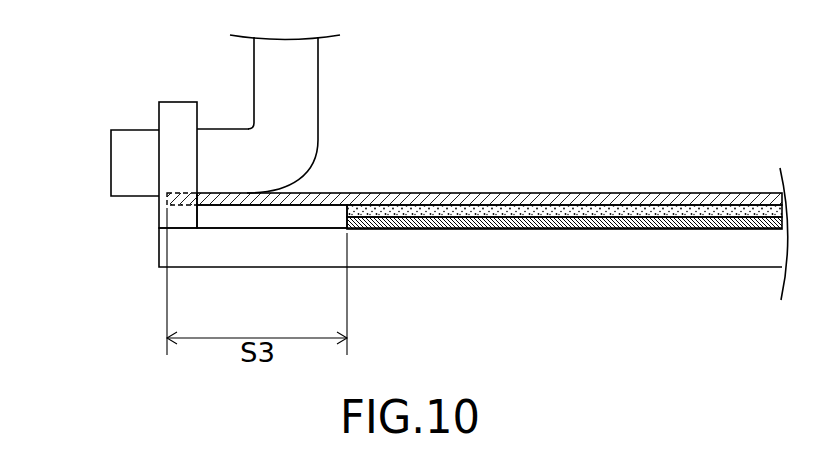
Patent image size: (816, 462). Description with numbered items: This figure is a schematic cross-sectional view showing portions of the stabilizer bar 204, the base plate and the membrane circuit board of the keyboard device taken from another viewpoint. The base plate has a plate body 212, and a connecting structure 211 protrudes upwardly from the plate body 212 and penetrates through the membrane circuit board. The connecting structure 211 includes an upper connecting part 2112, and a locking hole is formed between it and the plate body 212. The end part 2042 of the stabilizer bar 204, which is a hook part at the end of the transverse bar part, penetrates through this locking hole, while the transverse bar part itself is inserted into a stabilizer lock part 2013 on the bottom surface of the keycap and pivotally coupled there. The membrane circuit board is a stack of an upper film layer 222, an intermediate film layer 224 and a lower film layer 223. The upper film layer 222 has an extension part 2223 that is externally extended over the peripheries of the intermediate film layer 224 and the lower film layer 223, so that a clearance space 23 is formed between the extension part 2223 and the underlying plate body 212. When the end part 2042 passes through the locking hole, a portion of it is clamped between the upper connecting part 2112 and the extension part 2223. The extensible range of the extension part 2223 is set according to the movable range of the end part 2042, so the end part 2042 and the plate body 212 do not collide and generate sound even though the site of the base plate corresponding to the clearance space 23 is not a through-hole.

The stabilizer bar 204 is at (296, 93).
The connecting structure 211 is at (209, 117).
The upper connecting part 2112 is at (177, 101).
The end part 2042 is at (140, 129).
The upper film layer 222 is at (456, 191).
The extension part 2223 is at (300, 196).
The stabilizer lock part 2013 is at (158, 210).
The intermediate film layer 224 is at (581, 211).
The lower film layer 223 is at (636, 223).
The clearance space 23 is at (247, 216).
The plate body 212 is at (525, 250).